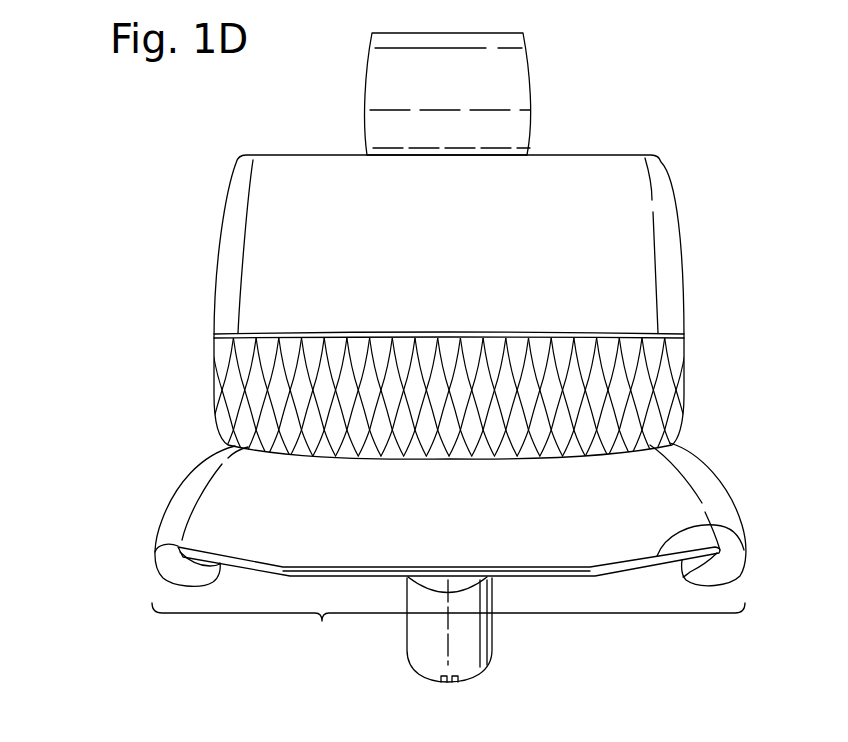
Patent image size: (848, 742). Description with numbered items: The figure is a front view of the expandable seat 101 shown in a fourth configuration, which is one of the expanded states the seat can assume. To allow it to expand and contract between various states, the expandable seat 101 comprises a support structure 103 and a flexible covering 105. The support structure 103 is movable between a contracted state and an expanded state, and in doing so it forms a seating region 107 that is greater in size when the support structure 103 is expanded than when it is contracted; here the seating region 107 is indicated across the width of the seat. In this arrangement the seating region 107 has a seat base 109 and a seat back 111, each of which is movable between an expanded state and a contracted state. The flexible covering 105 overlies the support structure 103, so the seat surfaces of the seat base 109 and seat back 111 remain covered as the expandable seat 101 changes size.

The expandable seat 101 is at (756, 168).
The support structure 103 is at (715, 525).
The flexible covering 105 is at (655, 482).
The seating region 107 is at (448, 629).
The seat base 109 is at (146, 494).
The seat back 111 is at (187, 259).